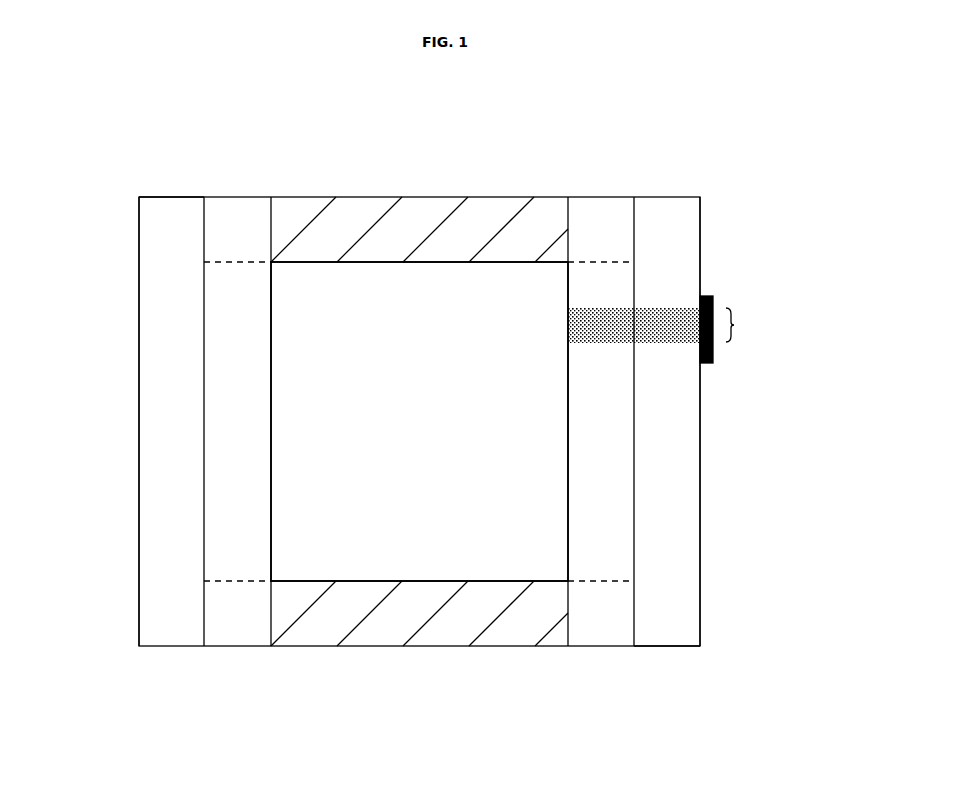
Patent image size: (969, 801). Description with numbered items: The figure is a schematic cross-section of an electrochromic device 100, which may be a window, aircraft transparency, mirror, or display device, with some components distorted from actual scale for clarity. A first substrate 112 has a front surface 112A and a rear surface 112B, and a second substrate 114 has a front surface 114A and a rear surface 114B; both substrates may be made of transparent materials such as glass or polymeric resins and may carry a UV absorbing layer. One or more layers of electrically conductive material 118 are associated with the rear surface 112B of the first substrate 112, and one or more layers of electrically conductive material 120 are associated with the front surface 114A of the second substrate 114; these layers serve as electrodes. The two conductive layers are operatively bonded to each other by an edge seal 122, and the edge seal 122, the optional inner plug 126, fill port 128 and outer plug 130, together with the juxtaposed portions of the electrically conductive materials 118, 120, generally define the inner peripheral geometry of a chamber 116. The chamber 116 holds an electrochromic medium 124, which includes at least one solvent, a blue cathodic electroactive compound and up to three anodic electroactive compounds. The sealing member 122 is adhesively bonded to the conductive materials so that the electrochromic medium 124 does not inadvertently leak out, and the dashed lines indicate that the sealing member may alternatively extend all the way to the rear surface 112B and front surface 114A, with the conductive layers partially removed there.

The electrochromic device 100 is at (456, 164).
The first substrate 112 is at (667, 648).
The front surface 112A is at (700, 493).
The rear surface 112B is at (634, 542).
The second substrate 114 is at (172, 648).
The front surface 114A is at (204, 343).
The rear surface 114B is at (139, 535).
The chamber 116 is at (435, 441).
The electrically conductive material 118 is at (602, 550).
The electrically conductive material 120 is at (238, 550).
The edge seal 122 is at (300, 213).
The electrochromic medium 124 is at (471, 518).
The inner plug 126 is at (634, 325).
The fill port 128 is at (735, 325).
The outer plug 130 is at (713, 353).